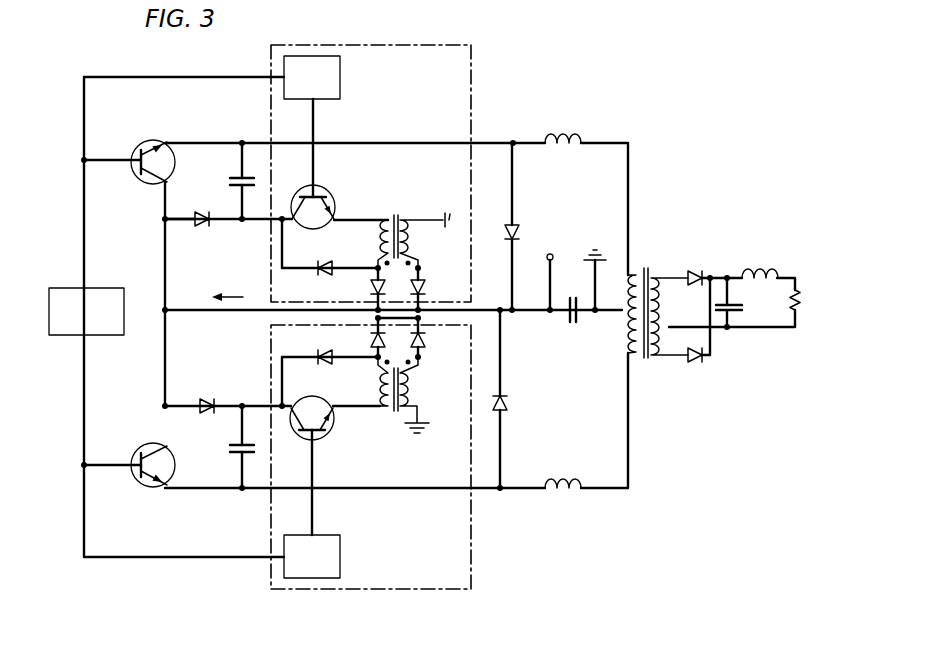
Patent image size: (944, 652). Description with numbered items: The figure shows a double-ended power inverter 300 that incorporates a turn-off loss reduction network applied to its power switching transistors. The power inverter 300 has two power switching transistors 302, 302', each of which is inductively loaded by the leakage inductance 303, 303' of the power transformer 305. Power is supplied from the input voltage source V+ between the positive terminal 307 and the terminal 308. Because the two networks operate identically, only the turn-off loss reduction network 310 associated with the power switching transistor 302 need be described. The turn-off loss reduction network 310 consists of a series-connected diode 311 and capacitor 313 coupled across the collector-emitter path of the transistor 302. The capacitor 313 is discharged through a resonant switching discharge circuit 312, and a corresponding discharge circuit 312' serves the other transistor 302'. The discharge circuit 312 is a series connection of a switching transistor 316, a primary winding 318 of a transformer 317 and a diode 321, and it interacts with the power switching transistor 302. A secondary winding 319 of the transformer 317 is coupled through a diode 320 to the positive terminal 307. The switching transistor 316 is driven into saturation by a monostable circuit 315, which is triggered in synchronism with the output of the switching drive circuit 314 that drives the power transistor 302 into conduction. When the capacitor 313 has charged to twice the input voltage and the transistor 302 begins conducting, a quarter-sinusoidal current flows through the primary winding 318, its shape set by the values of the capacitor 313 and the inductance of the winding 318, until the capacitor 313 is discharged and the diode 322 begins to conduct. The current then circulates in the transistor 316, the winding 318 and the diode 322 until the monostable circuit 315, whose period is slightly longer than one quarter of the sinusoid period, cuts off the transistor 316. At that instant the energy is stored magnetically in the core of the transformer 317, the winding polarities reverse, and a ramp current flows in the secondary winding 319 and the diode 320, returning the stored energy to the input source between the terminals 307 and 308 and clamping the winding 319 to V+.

The power inverter 300 is at (593, 580).
The power switching transistor 302 is at (150, 152).
The power switching transistor 302' is at (151, 476).
The leakage inductance 303 is at (563, 130).
The leakage inductance 303' is at (563, 474).
The power transformer 305 is at (658, 323).
The positive terminal 307 is at (561, 278).
The terminal 308 is at (604, 269).
The turn-off loss reduction network 310 is at (184, 203).
The diode 311 is at (208, 230).
The resonant switching discharge circuit 312 is at (405, 173).
The resonant switching discharge circuit 312' is at (398, 457).
The capacitor 313 is at (230, 182).
The switching drive circuit 314 is at (114, 298).
The monostable circuit 315 is at (340, 90).
The switching transistor 316 is at (325, 206).
The transformer 317 is at (398, 232).
The primary winding 318 is at (368, 244).
The secondary winding 319 is at (427, 240).
The diode 320 is at (433, 288).
The diode 321 is at (366, 288).
The diode 322 is at (328, 258).